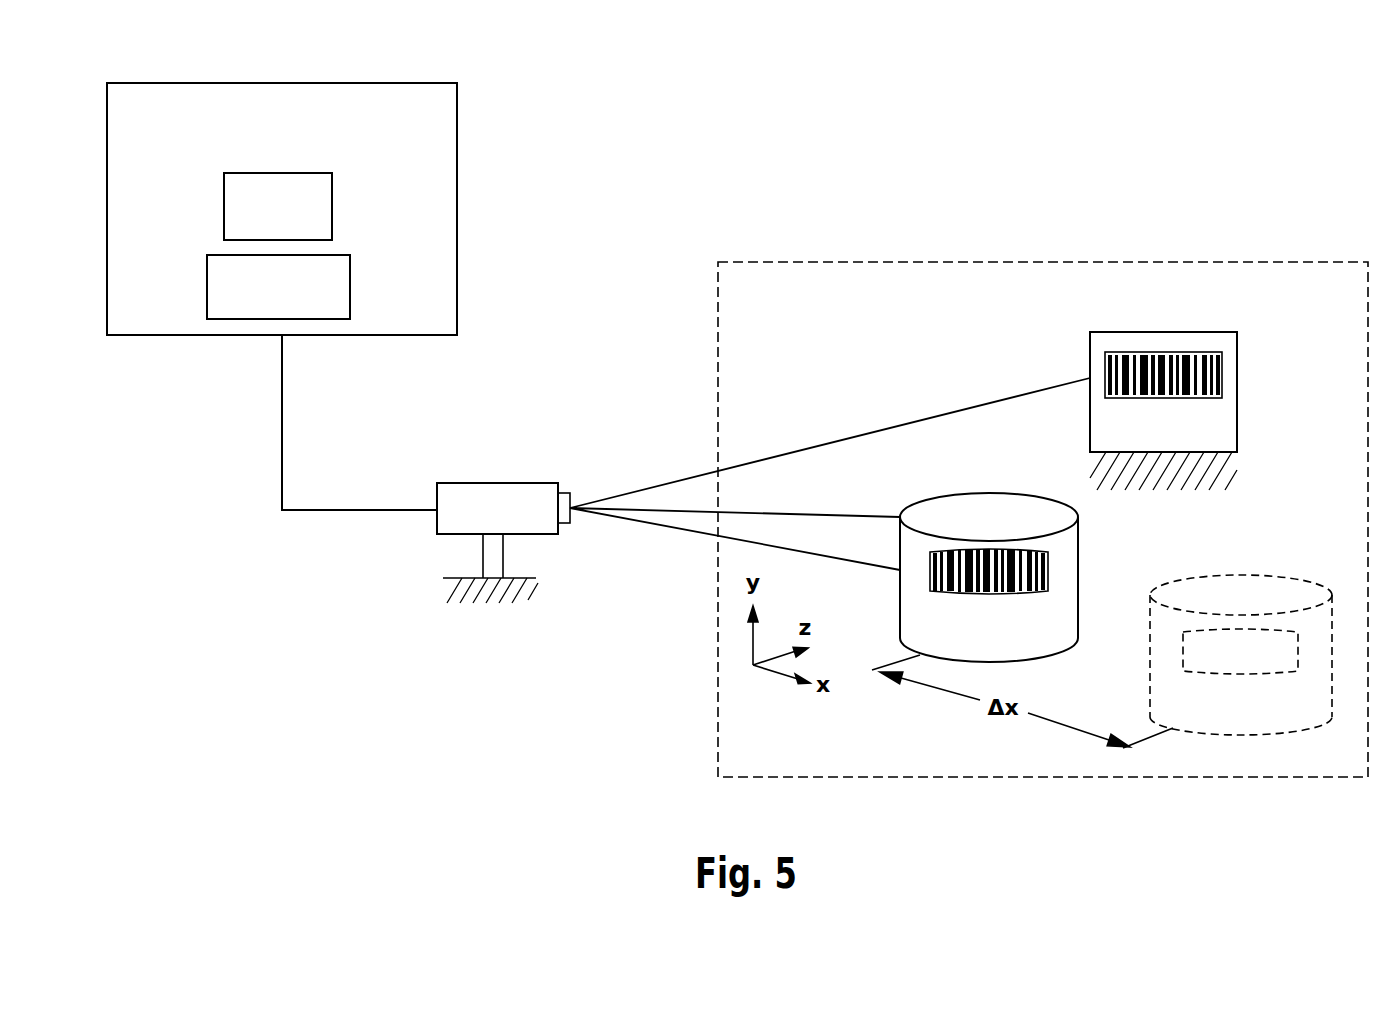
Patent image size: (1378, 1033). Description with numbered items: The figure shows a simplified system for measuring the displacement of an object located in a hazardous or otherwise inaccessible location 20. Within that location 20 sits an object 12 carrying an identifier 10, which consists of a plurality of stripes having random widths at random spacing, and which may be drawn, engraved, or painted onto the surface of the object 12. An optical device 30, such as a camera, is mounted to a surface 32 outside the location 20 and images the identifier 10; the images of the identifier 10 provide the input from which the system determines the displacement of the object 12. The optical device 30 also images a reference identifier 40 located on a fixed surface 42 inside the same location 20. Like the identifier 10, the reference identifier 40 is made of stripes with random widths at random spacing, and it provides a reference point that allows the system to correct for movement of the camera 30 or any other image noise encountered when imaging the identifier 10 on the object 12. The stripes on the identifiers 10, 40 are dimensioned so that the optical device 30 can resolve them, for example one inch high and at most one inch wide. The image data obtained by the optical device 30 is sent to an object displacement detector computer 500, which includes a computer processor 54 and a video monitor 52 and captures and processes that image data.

The object displacement detector computer 500 is at (283, 83).
The video monitor 52 is at (332, 208).
The computer processor 54 is at (350, 290).
The hazardous or otherwise inaccessible location 20 is at (768, 262).
The optical device 30 is at (540, 537).
The surface 32 is at (463, 578).
The reference identifier 40 is at (1222, 374).
The fixed surface 42 is at (1237, 415).
The object 12 is at (1078, 535).
The identifier 10 is at (1048, 571).